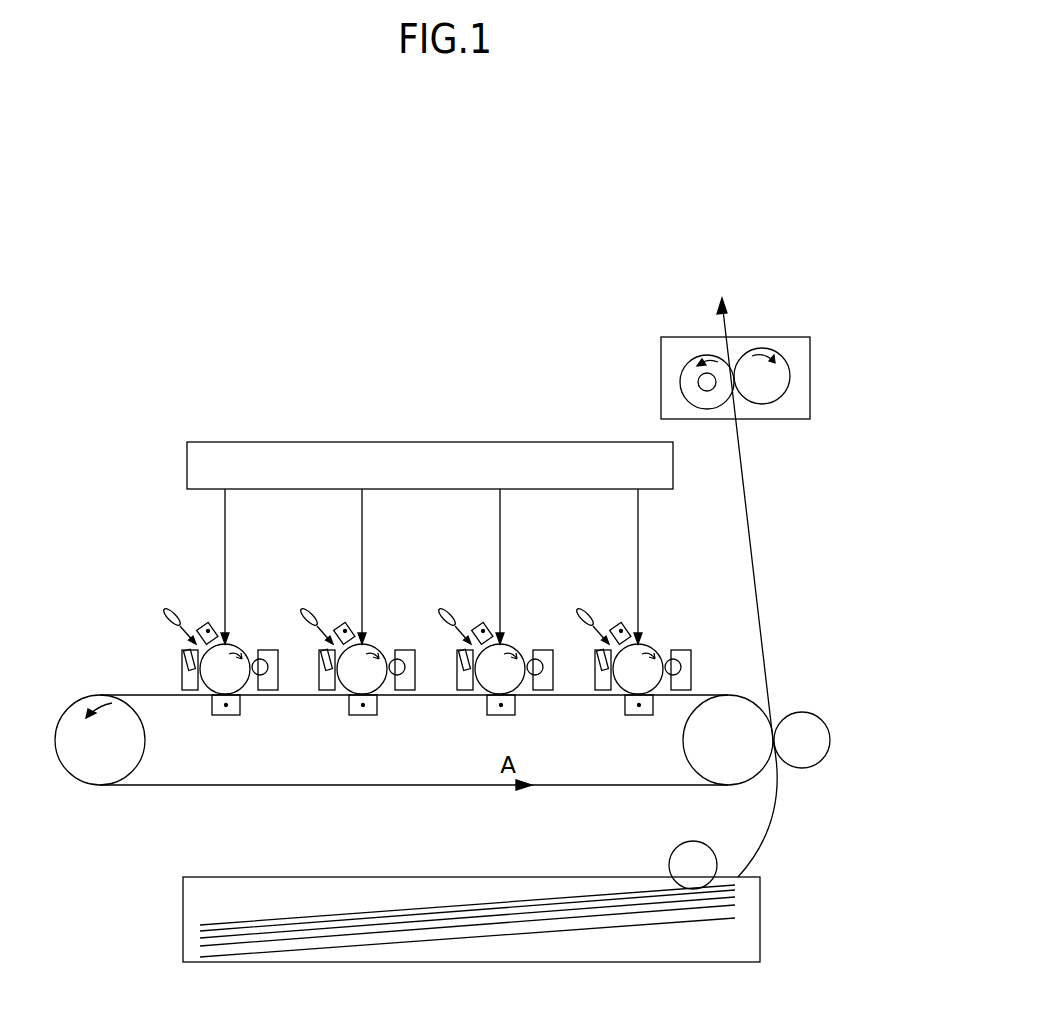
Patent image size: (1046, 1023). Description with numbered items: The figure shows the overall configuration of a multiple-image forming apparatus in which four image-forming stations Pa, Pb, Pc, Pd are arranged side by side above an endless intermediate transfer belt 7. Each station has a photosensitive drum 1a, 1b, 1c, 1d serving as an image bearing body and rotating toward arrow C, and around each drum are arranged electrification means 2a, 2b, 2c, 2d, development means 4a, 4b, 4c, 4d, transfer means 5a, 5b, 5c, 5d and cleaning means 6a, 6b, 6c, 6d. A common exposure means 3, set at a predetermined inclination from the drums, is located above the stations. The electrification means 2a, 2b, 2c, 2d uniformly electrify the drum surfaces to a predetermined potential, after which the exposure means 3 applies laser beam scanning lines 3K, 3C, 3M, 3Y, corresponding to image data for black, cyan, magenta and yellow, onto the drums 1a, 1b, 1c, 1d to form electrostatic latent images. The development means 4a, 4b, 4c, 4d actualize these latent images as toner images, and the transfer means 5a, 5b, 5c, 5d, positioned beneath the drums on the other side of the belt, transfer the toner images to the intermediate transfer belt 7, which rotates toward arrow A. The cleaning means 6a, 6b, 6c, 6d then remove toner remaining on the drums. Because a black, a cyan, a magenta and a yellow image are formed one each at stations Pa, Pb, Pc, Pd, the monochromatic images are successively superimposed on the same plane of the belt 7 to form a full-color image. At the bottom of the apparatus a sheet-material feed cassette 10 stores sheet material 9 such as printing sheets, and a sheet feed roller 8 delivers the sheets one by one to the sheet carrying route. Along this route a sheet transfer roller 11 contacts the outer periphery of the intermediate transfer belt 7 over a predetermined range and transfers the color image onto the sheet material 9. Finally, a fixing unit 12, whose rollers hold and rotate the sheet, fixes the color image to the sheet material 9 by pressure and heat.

The photosensitive drum 1a is at (619, 712).
The photosensitive drum 1b is at (517, 712).
The photosensitive drum 1c is at (372, 712).
The photosensitive drum 1d is at (236, 712).
The electrification means 2a is at (612, 589).
The electrification means 2b is at (474, 589).
The electrification means 2c is at (336, 589).
The electrification means 2d is at (199, 589).
The exposure means 3 is at (473, 442).
The scanning line 3Y is at (254, 566).
The scanning line 3M is at (392, 566).
The scanning line 3C is at (529, 566).
The scanning line 3K is at (668, 566).
The development means 4a is at (672, 695).
The development means 4b is at (550, 697).
The development means 4c is at (411, 697).
The development means 4d is at (275, 697).
The transfer means 5a is at (639, 733).
The transfer means 5b is at (479, 733).
The transfer means 5c is at (341, 733).
The transfer means 5d is at (204, 733).
The cleaning means 6a is at (582, 631).
The cleaning means 6b is at (443, 631).
The cleaning means 6c is at (306, 631).
The cleaning means 6d is at (156, 648).
The intermediate transfer belt 7 is at (143, 787).
The sheet feed roller 8 is at (683, 864).
The sheet material 9 is at (772, 842).
The sheet-material feed cassette 10 is at (183, 905).
The sheet transfer roller 11 is at (830, 712).
The fixing unit 12 is at (790, 291).
The image-forming station Pa is at (627, 634).
The image-forming station Pb is at (493, 634).
The image-forming station Pc is at (355, 634).
The image-forming station Pd is at (206, 634).